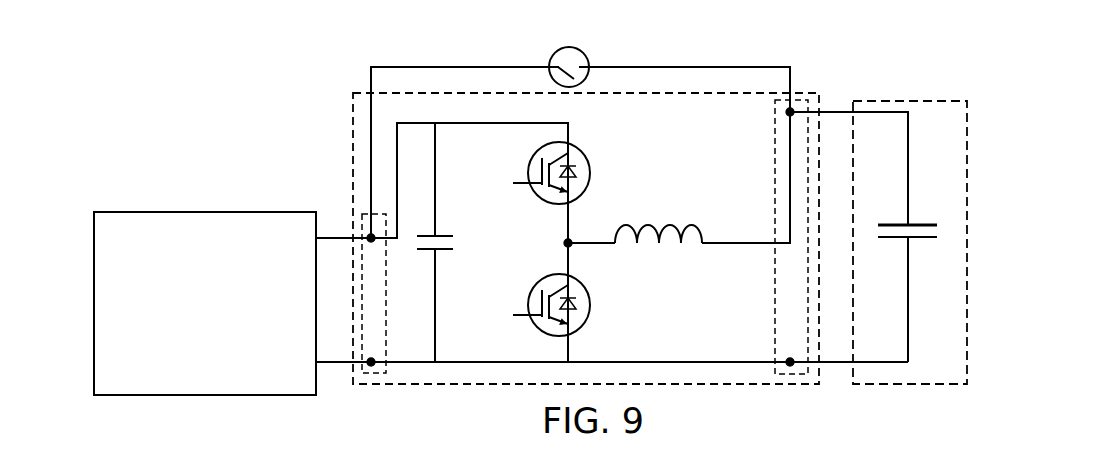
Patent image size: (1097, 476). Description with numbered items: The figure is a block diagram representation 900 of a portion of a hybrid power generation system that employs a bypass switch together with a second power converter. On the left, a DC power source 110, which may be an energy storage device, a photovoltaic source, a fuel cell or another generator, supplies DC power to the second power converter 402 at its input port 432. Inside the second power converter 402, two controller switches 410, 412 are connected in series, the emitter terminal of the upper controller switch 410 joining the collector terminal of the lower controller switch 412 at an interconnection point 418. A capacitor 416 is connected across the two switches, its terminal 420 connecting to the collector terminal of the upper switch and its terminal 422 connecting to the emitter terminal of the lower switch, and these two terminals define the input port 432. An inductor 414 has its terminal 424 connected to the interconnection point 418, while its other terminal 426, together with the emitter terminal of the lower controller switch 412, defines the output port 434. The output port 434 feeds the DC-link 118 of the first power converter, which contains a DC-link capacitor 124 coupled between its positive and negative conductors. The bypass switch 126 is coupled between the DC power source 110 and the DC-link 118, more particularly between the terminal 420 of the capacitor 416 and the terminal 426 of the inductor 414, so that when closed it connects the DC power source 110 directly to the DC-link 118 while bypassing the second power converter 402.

The block diagram representation 900 is at (196, 82).
The DC power source 110 is at (180, 212).
The second power converter 402 is at (353, 135).
The input port 432 is at (413, 293).
The output port 434 is at (775, 313).
The capacitor 416 is at (447, 234).
The terminal 420 is at (437, 151).
The terminal 422 is at (437, 337).
The controller switch 410 is at (590, 160).
The controller switch 412 is at (590, 324).
The interconnection point 418 is at (565, 242).
The terminal 424 is at (607, 246).
The inductor 414 is at (648, 224).
The terminal 426 is at (737, 242).
The bypass switch 126 is at (590, 57).
The DC-link 118 is at (967, 165).
The DC-link capacitor 124 is at (920, 222).